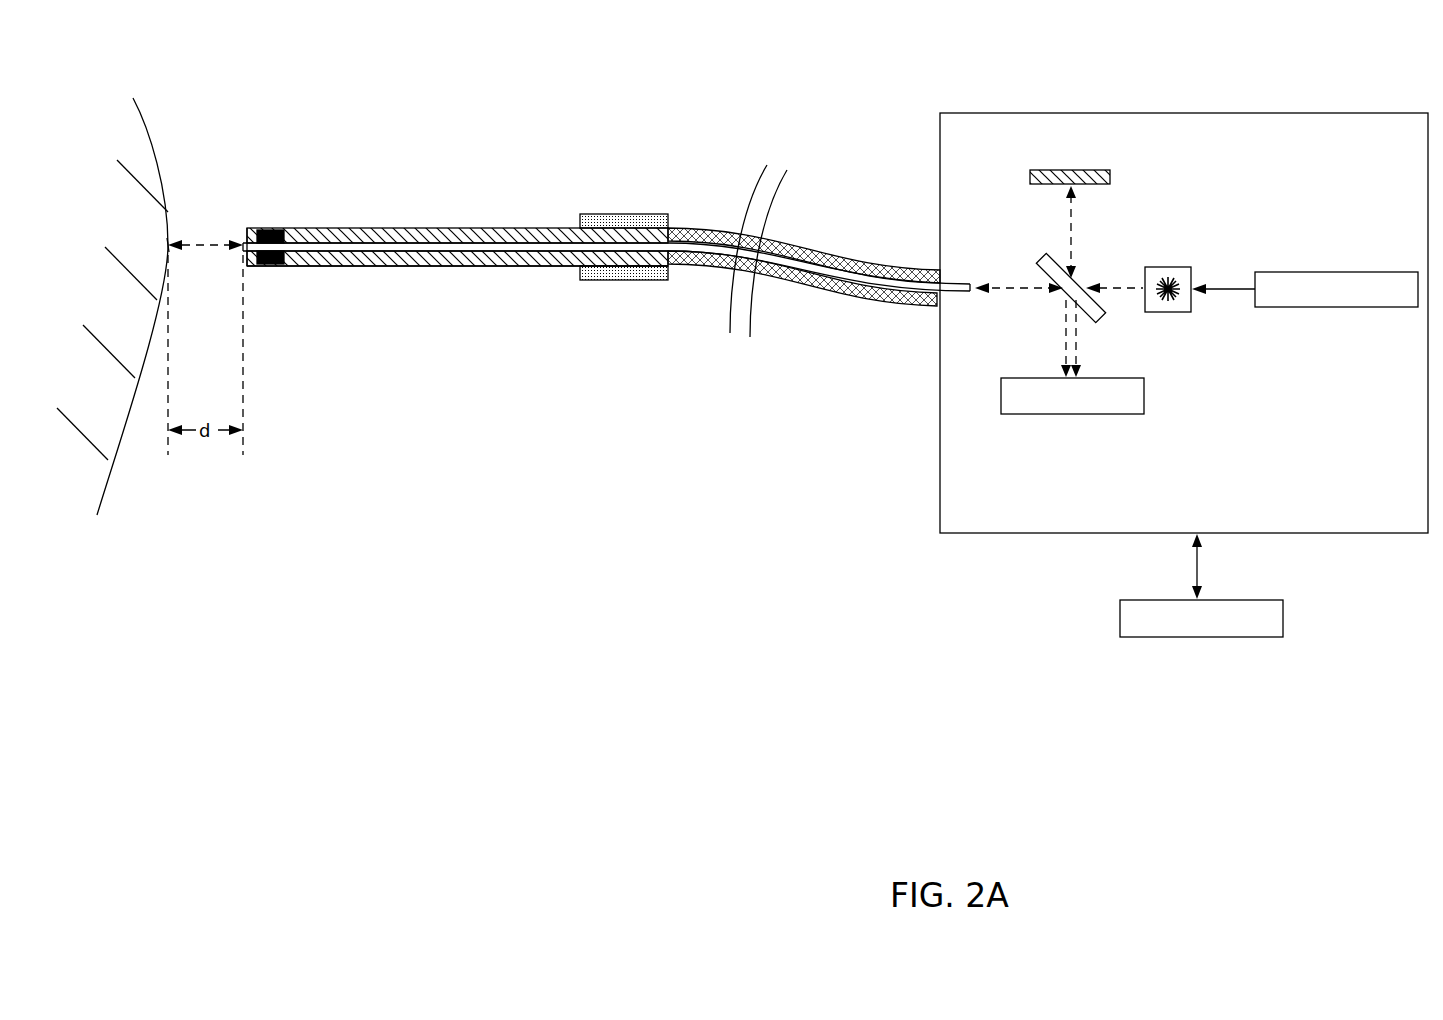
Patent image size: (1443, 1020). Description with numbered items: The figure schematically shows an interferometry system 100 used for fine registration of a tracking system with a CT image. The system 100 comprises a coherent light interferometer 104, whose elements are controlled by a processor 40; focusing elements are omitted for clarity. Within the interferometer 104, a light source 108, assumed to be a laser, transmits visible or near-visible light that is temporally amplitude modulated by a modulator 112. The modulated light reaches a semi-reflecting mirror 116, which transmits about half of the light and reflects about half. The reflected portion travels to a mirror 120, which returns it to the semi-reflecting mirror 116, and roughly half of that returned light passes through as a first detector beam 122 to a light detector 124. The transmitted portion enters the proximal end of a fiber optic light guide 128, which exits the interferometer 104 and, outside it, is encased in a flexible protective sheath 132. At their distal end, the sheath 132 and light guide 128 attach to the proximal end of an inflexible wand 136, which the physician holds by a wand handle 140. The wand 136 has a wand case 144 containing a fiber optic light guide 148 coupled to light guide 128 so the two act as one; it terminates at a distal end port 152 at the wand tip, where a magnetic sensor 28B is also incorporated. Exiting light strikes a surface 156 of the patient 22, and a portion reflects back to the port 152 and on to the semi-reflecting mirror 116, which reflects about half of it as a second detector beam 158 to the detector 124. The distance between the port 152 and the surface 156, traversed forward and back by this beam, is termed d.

The patient 22 is at (103, 480).
The magnetic sensor 28B is at (270, 267).
The processor 40 is at (1167, 637).
The interferometry system 100 is at (512, 526).
The coherent light interferometer 104 is at (1010, 533).
The light source 108 is at (1190, 267).
The modulator 112 is at (1305, 272).
The semi-reflecting mirror 116 is at (1043, 258).
The mirror 120 is at (1080, 170).
The first detector beam 122 is at (1085, 340).
The light detector 124 is at (1088, 414).
The fiber optic light guide 128 is at (830, 258).
The flexible protective sheath 132 is at (847, 290).
The inflexible wand 136 is at (443, 268).
The wand handle 140 is at (629, 280).
The wand case 144 is at (336, 240).
The fiber optic light guide 148 is at (427, 245).
The distal end port 152 is at (243, 235).
The surface 156 is at (170, 243).
The second detector beam 158 is at (1060, 340).